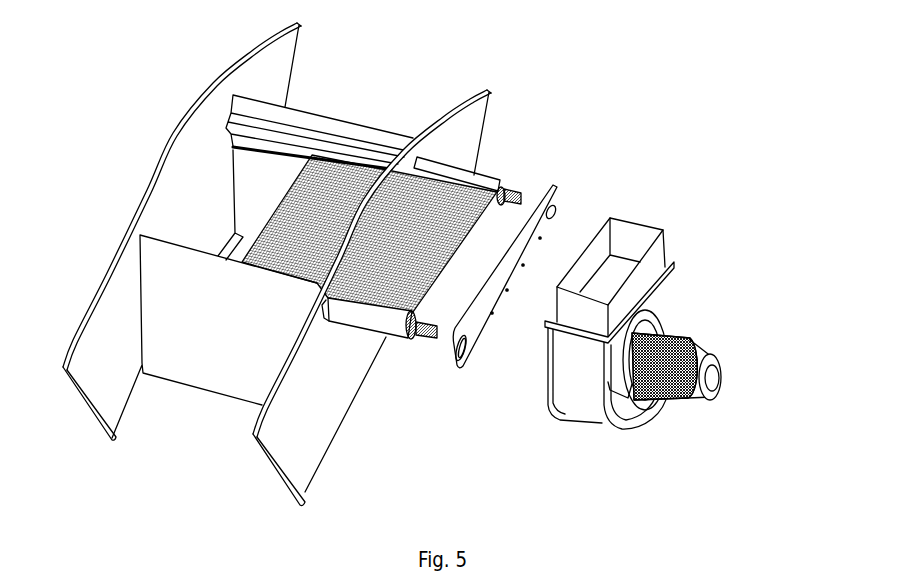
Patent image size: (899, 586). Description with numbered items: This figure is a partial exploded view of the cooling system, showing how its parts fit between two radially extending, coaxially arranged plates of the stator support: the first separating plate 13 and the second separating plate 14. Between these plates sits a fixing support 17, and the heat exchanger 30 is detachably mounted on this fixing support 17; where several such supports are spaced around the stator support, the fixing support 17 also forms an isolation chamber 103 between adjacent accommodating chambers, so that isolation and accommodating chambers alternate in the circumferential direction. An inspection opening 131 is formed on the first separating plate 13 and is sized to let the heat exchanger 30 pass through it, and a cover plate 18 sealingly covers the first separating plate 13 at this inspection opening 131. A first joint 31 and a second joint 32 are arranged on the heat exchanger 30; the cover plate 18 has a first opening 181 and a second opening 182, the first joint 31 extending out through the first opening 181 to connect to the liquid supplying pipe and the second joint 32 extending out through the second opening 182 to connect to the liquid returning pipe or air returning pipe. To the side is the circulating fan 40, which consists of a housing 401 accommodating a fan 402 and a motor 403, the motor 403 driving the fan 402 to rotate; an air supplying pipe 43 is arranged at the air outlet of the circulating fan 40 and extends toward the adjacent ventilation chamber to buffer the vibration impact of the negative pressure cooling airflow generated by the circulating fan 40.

The first separating plate 13 is at (297, 465).
The second separating plate 14 is at (102, 395).
The fixing support 17 is at (290, 112).
The cover plate 18 is at (495, 307).
The heat exchanger 30 is at (328, 152).
The first joint 31 is at (416, 340).
The second joint 32 is at (514, 190).
The circulating fan 40 is at (632, 428).
The air supplying pipe 43 is at (637, 225).
The isolation chamber 103 is at (213, 410).
The inspection opening 131 is at (328, 320).
The first opening 181 is at (458, 367).
The second opening 182 is at (556, 203).
The housing 401 is at (575, 382).
The fan 402 is at (655, 320).
The motor 403 is at (685, 333).